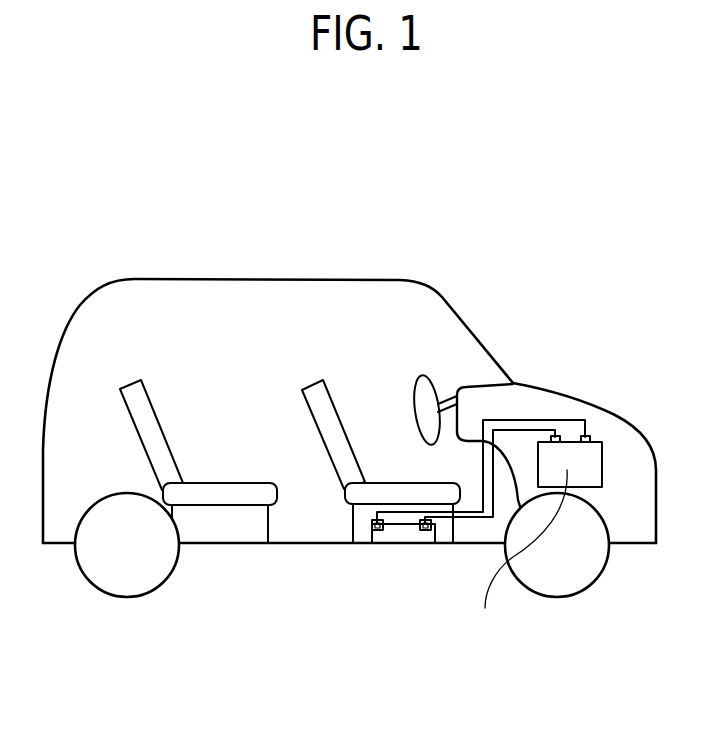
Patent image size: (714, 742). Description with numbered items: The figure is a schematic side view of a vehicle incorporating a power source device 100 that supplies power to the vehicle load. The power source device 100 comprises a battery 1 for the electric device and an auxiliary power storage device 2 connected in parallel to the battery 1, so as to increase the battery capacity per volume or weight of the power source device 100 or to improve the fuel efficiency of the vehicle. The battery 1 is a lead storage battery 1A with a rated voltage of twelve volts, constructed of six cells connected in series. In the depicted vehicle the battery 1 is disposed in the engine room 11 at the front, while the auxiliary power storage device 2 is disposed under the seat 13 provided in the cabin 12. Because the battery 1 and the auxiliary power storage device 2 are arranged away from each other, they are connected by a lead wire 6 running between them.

The cabin 12 is at (268, 312).
The engine room 11 is at (625, 447).
The seat 13 is at (386, 446).
The lead wire 6 is at (522, 430).
The auxiliary power storage device 2 is at (407, 540).
The lead storage battery 1A is at (567, 470).
The battery 1 is at (531, 546).
The power source device 100 is at (487, 576).